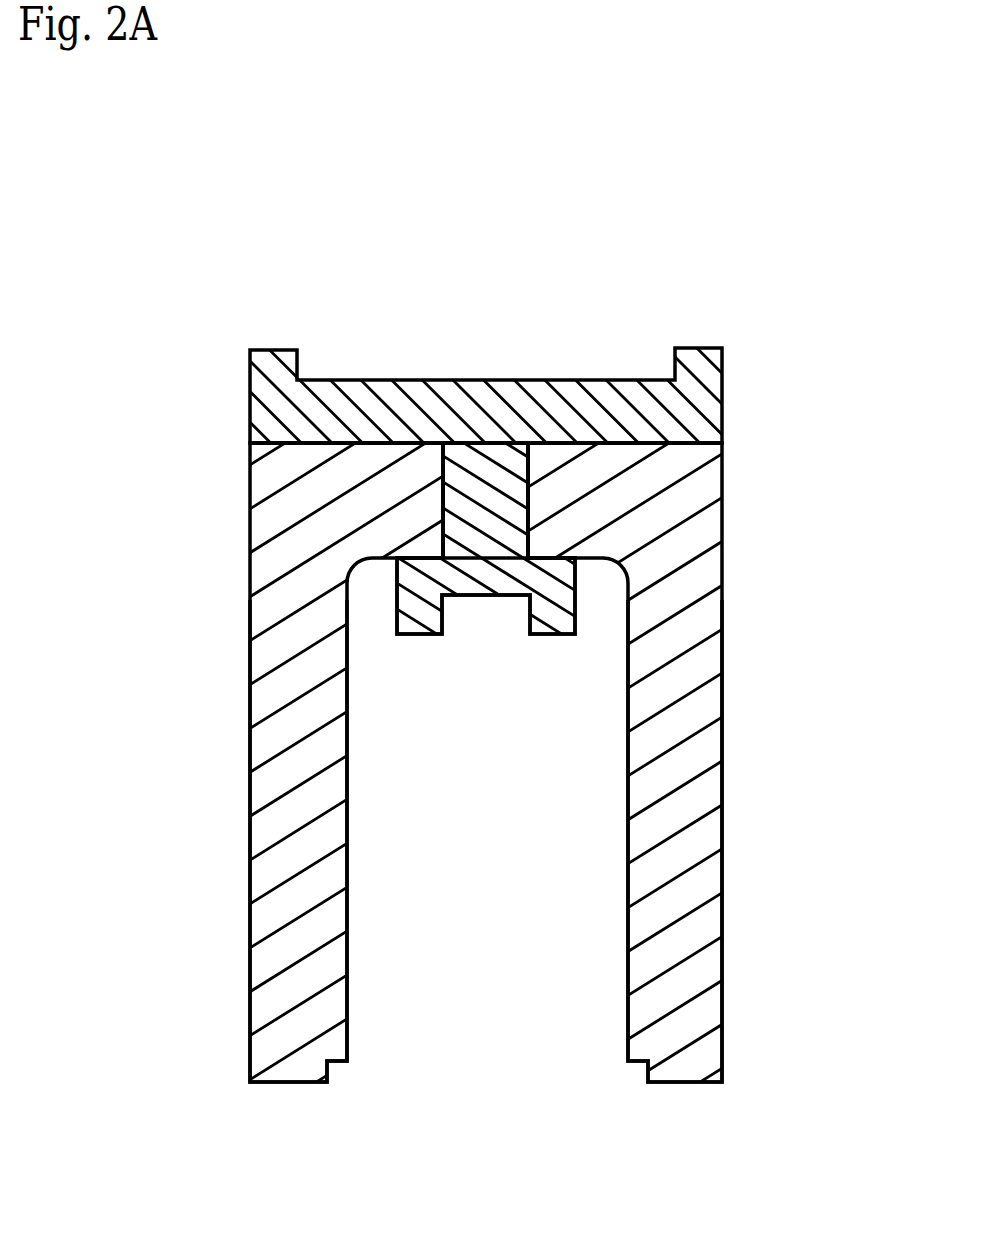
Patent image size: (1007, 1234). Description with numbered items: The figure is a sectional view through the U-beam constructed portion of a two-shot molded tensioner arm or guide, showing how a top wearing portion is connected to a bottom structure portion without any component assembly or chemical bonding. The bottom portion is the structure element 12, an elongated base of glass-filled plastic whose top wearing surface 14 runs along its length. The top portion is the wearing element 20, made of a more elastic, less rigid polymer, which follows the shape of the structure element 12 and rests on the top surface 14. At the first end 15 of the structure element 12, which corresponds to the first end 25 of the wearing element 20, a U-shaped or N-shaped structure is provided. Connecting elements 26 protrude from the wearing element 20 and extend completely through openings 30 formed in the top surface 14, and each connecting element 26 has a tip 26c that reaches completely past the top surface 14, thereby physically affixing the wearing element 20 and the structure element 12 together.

The structure element 12 is at (685, 760).
The top wearing surface 14 is at (722, 443).
The first end 15 is at (293, 945).
The wearing element 20 is at (690, 410).
The first end 25 is at (473, 422).
The connecting elements 26 is at (485, 543).
The tip 26c is at (530, 627).
The openings 30 is at (448, 490).